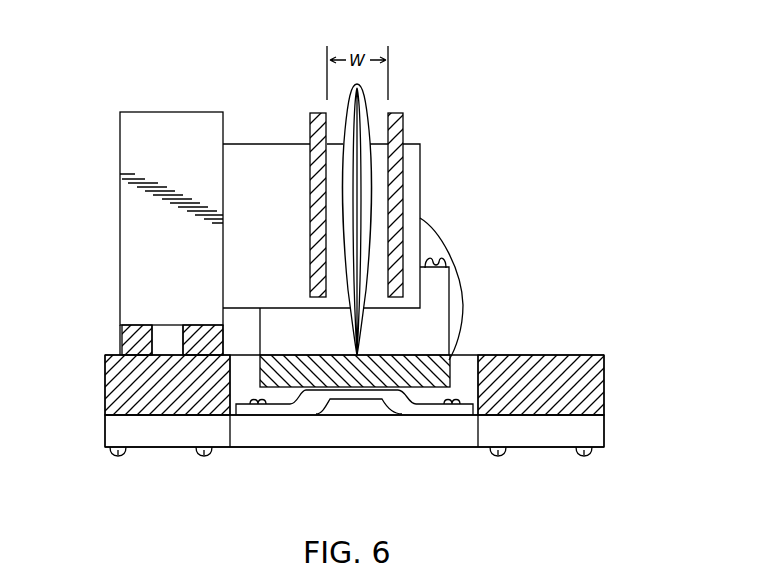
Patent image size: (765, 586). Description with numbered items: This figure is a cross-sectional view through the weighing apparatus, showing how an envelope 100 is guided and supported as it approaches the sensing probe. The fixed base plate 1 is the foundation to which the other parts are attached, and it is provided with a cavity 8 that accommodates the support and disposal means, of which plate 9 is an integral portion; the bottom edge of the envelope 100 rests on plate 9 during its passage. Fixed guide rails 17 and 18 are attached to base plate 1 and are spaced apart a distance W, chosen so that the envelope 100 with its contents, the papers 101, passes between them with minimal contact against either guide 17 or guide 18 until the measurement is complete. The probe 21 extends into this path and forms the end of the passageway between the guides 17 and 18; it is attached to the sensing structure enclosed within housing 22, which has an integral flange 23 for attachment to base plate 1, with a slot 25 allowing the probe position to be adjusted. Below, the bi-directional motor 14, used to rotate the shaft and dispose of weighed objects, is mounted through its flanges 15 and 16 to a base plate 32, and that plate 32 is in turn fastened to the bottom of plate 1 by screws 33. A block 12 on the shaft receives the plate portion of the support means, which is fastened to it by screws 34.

The fixed base plate 1 is at (596, 360).
The cavity 8 is at (492, 362).
The plate 9 is at (440, 372).
The block 12 is at (443, 305).
The bi-directional motor 14 is at (432, 246).
The mounting flange 15 is at (322, 400).
The mounting flange 16 is at (402, 403).
The guide rail 17 is at (316, 128).
The guide rail 18 is at (400, 128).
The probe 21 is at (418, 190).
The housing 22 is at (128, 128).
The flange 23 is at (128, 346).
The slot 25 is at (165, 335).
The base plate 32 is at (266, 440).
The screw 33 is at (202, 452).
The screw 34 is at (445, 262).
The envelope 100 is at (366, 96).
The papers 101 is at (360, 140).